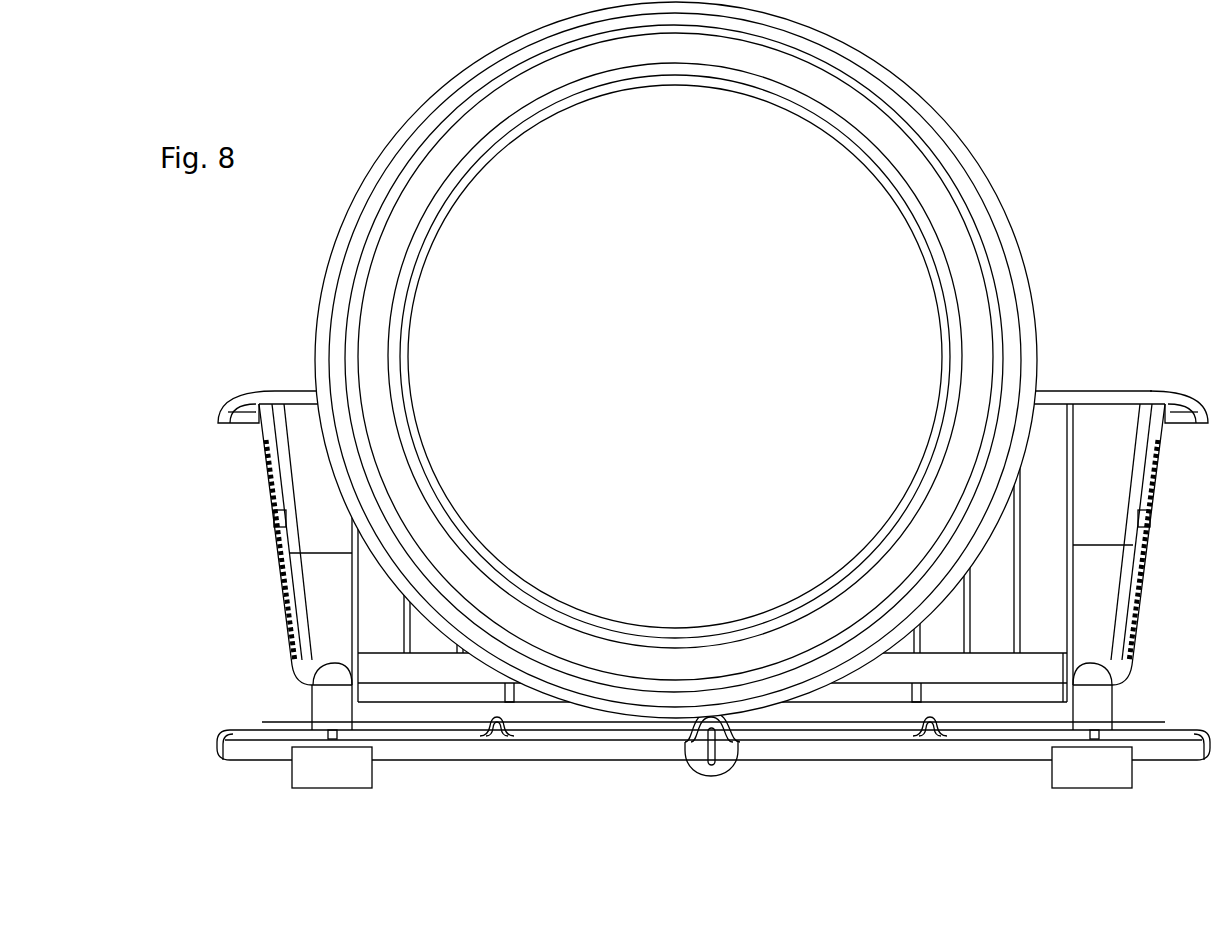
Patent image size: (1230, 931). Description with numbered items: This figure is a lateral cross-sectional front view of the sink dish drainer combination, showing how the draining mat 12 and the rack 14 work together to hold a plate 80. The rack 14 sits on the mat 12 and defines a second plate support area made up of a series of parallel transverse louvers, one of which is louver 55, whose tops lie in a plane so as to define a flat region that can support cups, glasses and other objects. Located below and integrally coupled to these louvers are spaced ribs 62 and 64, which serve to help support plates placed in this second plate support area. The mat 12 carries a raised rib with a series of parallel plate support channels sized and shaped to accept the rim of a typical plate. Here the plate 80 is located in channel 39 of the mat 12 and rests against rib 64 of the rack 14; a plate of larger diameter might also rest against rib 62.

The draining mat 12 is at (215, 762).
The rack 14 is at (268, 568).
The plate support channel 39 is at (692, 722).
The louver 55 is at (1003, 665).
The spaced rib 62 is at (915, 693).
The spaced rib 64 is at (512, 693).
The plate 80 is at (947, 121).